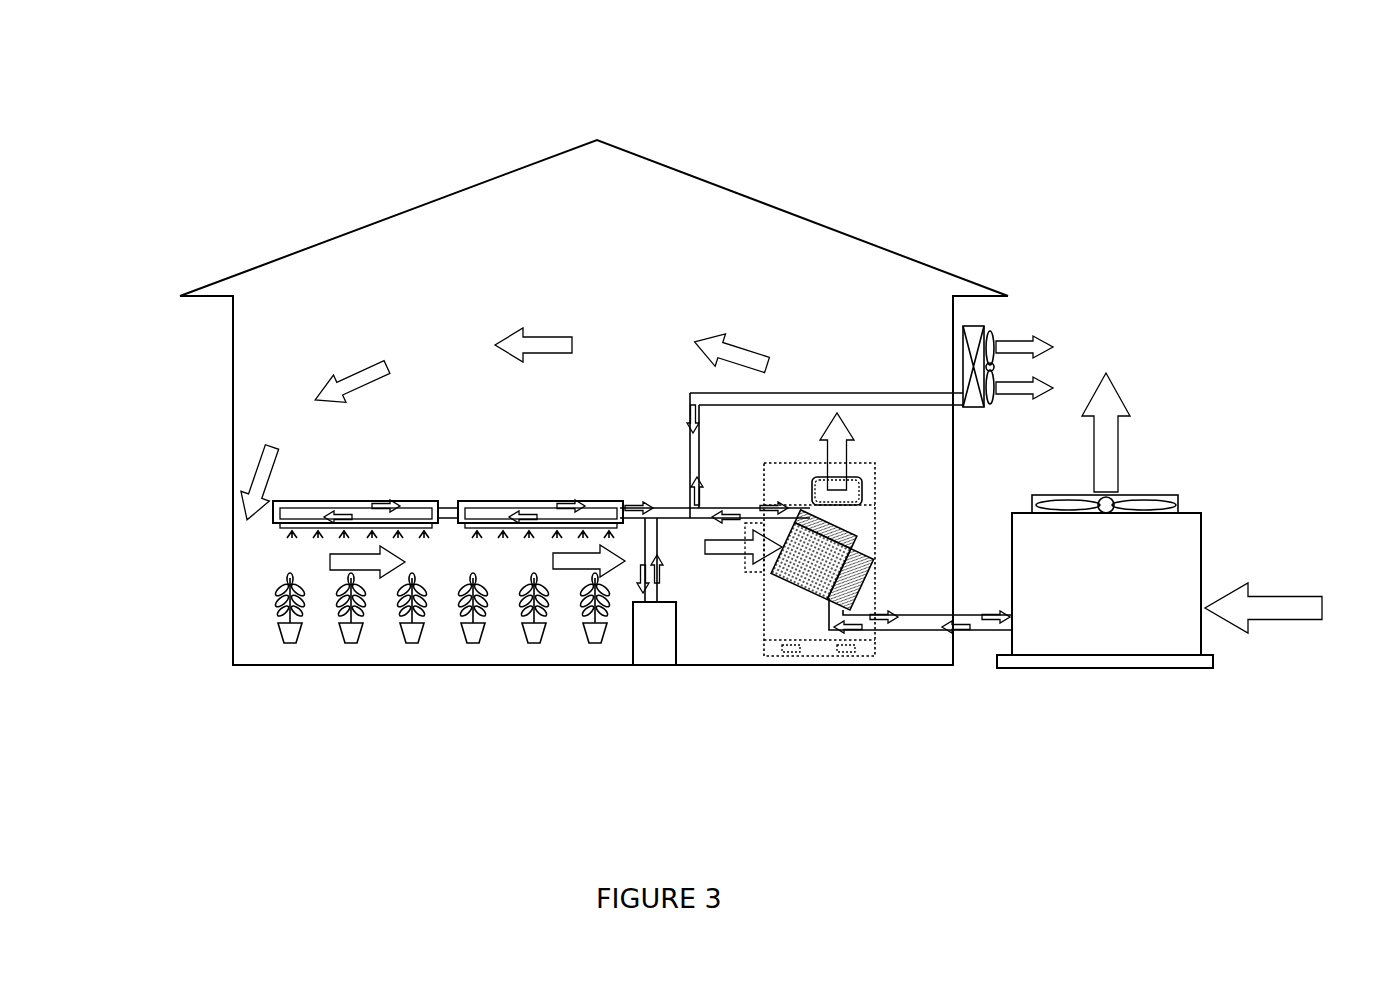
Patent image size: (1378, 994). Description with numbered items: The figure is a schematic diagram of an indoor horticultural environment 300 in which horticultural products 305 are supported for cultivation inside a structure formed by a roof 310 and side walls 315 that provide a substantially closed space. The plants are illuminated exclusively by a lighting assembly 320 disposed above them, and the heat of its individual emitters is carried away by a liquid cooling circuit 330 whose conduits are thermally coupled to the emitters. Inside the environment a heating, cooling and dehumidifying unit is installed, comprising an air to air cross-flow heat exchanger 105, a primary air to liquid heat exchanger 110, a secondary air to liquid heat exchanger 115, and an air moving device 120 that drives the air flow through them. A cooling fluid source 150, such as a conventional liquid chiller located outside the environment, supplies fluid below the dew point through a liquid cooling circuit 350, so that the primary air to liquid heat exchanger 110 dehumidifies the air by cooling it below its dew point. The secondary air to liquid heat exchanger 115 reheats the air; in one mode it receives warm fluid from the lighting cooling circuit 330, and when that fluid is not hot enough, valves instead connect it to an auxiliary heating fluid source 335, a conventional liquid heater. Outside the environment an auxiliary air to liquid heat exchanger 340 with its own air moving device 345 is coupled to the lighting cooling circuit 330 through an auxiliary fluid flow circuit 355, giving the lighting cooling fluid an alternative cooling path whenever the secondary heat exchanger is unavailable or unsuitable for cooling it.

The indoor horticultural environment 300 is at (407, 95).
The horticultural products 305 is at (535, 645).
The roof 310 is at (597, 140).
The side walls 315 is at (232, 400).
The lighting assembly 320 is at (357, 523).
The liquid cooling circuit 330 is at (460, 503).
The auxiliary heating fluid source 335 is at (650, 665).
The auxiliary air to liquid heat exchanger 340 is at (978, 326).
The air moving device 345 is at (998, 335).
The liquid cooling circuit 350 is at (952, 630).
The auxiliary fluid flow circuit 355 is at (790, 385).
The air to air cross-flow heat exchanger 105 is at (797, 572).
The primary air to liquid heat exchanger 110 is at (858, 580).
The secondary air to liquid heat exchanger 115 is at (830, 525).
The air moving device 120 is at (847, 497).
The cooling fluid source 150 is at (1159, 520).